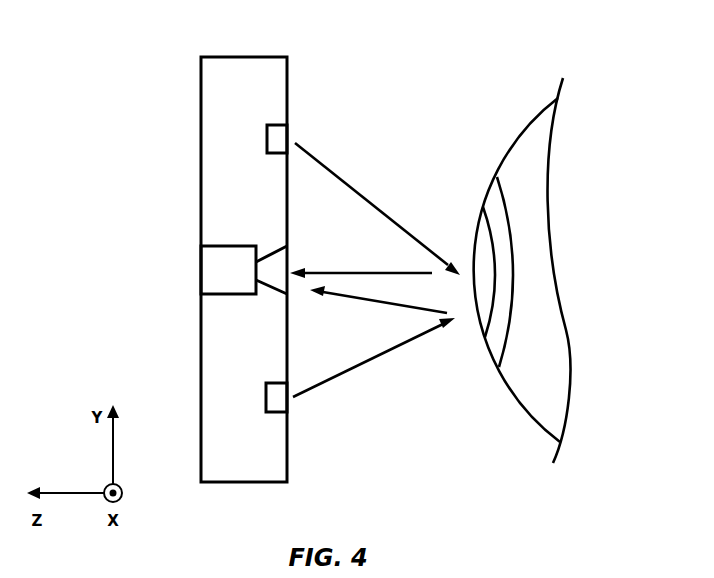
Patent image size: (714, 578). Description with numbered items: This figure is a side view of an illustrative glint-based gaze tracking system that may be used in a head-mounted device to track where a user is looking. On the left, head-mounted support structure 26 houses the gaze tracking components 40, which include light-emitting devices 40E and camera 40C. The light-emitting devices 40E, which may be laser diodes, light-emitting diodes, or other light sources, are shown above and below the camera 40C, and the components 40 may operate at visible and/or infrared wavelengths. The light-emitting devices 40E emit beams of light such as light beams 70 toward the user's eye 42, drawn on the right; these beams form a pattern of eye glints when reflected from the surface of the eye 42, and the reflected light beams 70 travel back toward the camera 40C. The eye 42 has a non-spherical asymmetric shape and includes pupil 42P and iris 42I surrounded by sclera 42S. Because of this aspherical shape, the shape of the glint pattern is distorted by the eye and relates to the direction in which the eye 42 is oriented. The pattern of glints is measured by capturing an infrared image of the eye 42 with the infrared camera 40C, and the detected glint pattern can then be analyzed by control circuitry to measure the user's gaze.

The head-mounted support structure 26 is at (240, 68).
The gaze tracking components 40 is at (254, 310).
The camera 40C is at (213, 272).
The light-emitting devices 40E is at (280, 135).
The light beams 70 is at (386, 213).
The eye 42 is at (392, 60).
The sclera 42S is at (535, 162).
The iris 42I is at (502, 227).
The pupil 42P is at (483, 277).